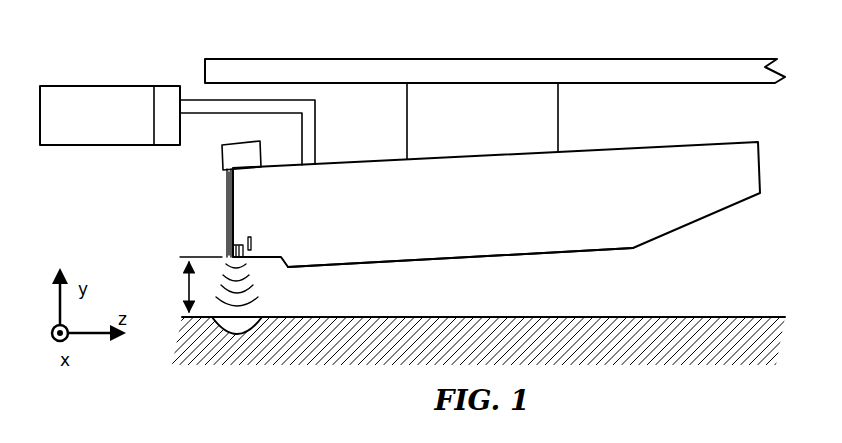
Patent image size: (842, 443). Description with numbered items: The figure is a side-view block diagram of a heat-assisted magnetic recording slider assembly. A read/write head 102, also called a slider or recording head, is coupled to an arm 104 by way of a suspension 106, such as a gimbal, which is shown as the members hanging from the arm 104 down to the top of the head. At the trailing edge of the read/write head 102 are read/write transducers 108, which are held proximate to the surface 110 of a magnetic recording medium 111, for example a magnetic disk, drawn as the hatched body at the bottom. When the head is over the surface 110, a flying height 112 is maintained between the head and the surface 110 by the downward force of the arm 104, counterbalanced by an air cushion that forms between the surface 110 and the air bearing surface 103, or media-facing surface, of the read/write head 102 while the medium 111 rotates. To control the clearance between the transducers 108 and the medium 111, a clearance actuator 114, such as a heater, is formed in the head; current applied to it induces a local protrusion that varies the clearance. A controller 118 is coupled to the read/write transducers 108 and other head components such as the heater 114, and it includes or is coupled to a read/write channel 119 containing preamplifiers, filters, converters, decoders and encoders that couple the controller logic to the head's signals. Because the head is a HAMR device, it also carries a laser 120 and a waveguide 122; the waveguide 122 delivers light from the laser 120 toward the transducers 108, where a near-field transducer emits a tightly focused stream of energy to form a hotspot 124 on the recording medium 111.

The read/write head 102 is at (672, 150).
The air bearing surface 103 is at (368, 268).
The arm 104 is at (713, 62).
The suspension 106 is at (559, 114).
The read/write transducers 108 is at (232, 248).
The surface 110 is at (672, 317).
The magnetic recording medium 111 is at (683, 355).
The flying height 112 is at (183, 284).
The clearance actuator 114 is at (247, 233).
The controller 118 is at (90, 85).
The read/write channel 119 is at (163, 86).
The laser 120 is at (240, 150).
The waveguide 122 is at (228, 193).
The hotspot 124 is at (252, 317).